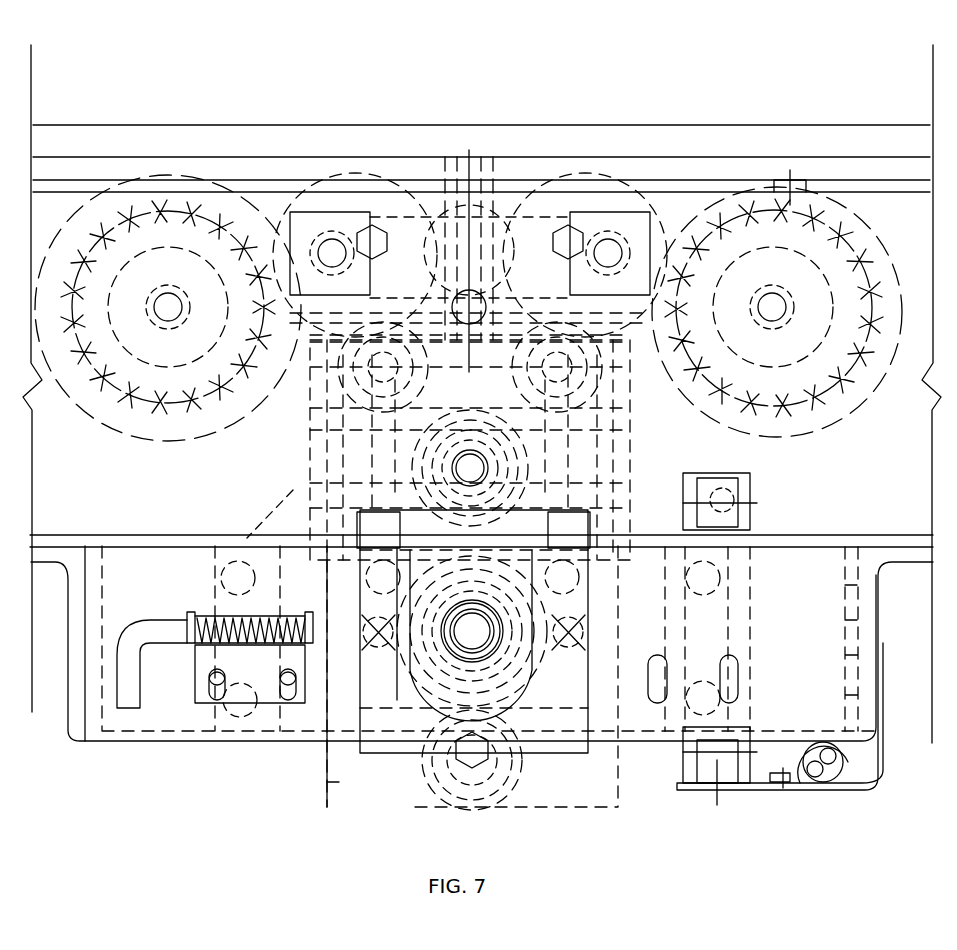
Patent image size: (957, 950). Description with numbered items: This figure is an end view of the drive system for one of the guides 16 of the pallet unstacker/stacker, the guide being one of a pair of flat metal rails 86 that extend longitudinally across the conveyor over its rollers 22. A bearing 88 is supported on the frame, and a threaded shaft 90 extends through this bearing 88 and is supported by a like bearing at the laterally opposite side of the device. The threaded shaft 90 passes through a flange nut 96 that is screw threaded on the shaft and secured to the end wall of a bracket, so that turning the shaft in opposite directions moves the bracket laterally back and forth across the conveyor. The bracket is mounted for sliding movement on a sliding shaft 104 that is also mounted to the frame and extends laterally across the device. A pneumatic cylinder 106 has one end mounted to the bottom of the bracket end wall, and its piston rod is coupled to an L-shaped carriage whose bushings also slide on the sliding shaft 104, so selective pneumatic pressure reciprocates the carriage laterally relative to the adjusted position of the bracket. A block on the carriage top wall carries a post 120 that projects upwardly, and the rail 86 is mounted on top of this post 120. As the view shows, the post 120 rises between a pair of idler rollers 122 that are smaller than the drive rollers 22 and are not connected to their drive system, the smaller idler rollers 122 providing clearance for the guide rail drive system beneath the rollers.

The guides 16 is at (557, 135).
The rollers 22 is at (80, 200).
The rail 86 is at (644, 123).
The bearing 88 is at (402, 662).
The threaded shaft 90 is at (498, 660).
The flange nut 96 is at (355, 763).
The sliding shaft 104 is at (297, 475).
The pneumatic cylinder 106 is at (517, 792).
The post 120 is at (443, 187).
The idler rollers 122 is at (328, 185).